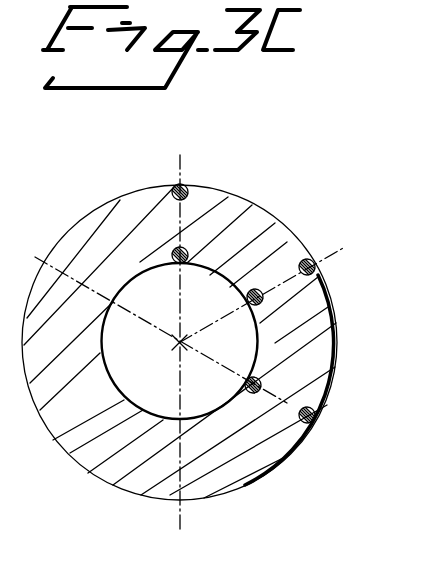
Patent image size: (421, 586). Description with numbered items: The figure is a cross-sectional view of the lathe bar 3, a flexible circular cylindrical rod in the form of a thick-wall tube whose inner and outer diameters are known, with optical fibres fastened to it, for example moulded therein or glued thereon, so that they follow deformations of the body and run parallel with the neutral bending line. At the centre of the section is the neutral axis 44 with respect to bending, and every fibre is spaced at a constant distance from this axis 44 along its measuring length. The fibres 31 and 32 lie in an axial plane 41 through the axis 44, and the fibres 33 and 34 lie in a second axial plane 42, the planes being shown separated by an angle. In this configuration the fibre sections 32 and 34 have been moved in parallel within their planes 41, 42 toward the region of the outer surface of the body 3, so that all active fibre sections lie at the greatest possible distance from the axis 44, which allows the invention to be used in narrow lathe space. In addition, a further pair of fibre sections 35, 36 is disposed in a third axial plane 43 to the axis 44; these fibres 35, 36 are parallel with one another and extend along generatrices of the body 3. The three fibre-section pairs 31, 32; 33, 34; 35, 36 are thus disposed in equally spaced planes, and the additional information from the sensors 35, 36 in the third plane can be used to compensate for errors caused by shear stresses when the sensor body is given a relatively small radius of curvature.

The lathe bar 3 is at (97, 463).
The optical fibre 31 is at (174, 184).
The optical fibre 32 is at (175, 261).
The optical fibre 33 is at (307, 259).
The optical fibre 34 is at (247, 296).
The fibre section 35 is at (323, 408).
The fibre section 36 is at (251, 378).
The axial plane 41 is at (182, 165).
The axial plane 42 is at (325, 257).
The axial plane 43 is at (315, 421).
The neutral axis 44 is at (178, 344).